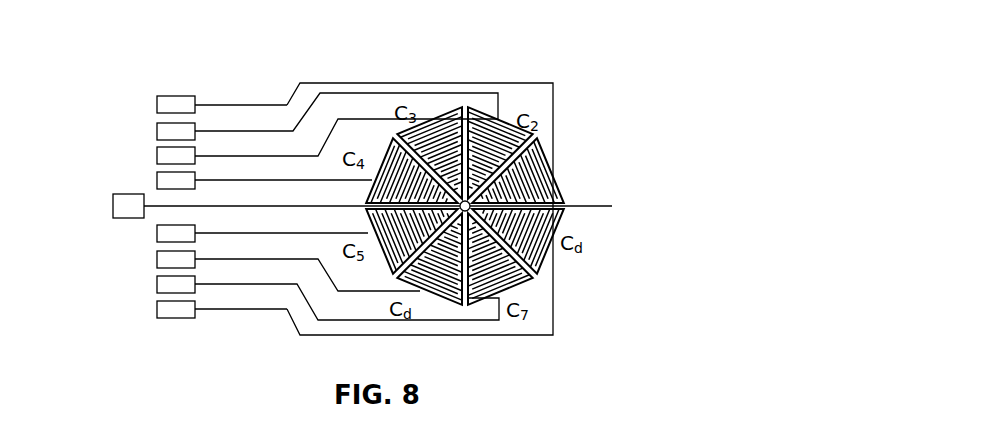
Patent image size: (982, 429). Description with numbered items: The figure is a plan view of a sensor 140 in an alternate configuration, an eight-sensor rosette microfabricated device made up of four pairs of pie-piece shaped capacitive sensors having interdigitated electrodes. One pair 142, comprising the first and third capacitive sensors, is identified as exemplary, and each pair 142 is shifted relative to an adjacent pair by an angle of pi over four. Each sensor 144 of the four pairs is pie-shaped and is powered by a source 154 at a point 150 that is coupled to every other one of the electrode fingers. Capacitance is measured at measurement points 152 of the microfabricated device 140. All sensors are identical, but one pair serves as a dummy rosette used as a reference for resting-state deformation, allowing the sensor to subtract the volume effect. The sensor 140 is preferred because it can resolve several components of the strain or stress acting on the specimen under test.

The sensor 140 is at (537, 48).
The pair 142 is at (473, 118).
The sensor 144 is at (565, 203).
The point 150 is at (396, 218).
The measurement points 152 is at (157, 127).
The source 154 is at (113, 200).